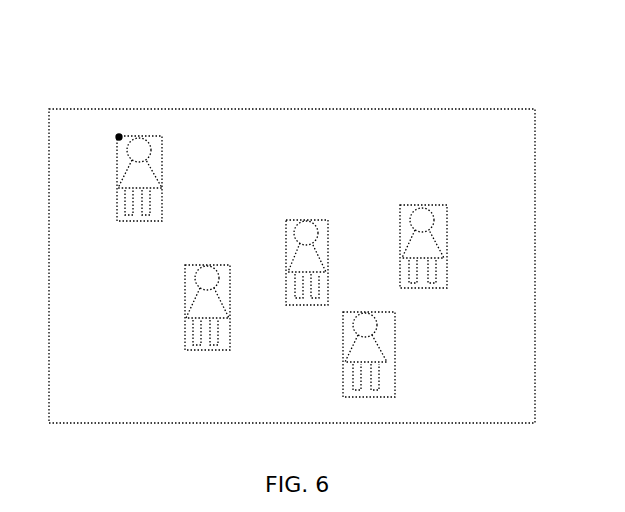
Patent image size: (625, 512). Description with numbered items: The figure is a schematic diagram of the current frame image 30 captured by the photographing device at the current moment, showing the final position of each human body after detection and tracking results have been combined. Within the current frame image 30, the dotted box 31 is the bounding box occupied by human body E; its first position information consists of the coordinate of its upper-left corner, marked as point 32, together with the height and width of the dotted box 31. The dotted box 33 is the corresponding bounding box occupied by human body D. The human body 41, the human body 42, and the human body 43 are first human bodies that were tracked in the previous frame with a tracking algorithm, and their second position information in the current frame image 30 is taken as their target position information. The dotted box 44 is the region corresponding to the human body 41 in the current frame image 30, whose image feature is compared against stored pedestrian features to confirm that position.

The current frame image 30 is at (352, 108).
The dotted box 31 is at (130, 134).
The point 32 is at (119, 137).
The dotted box 33 is at (185, 300).
The human body 41 is at (307, 233).
The human body 42 is at (425, 210).
The human body 43 is at (357, 352).
The dotted box 44 is at (302, 302).